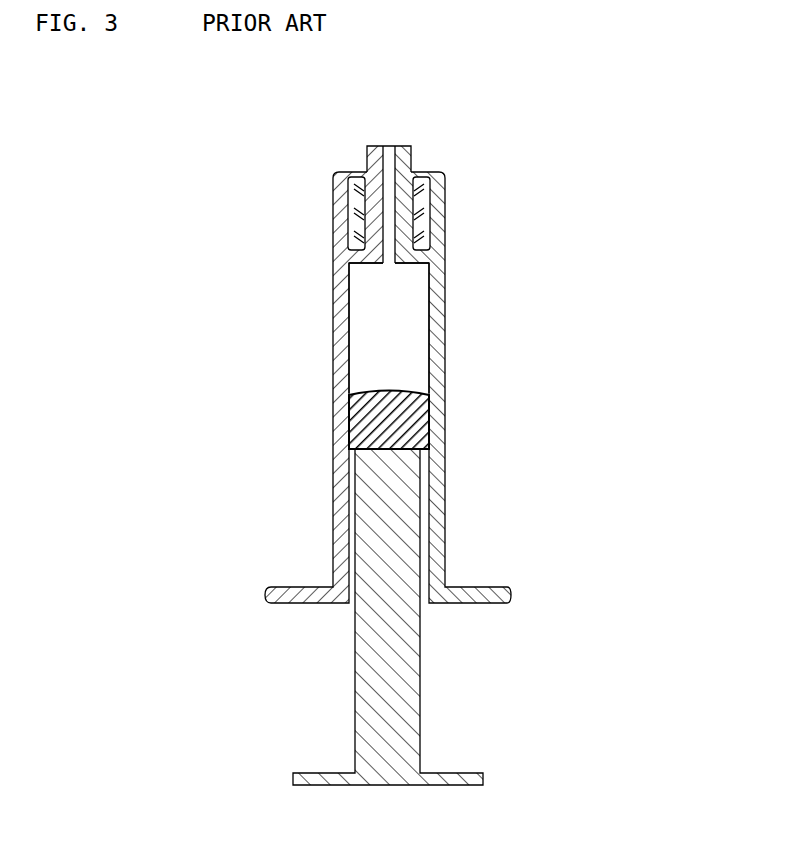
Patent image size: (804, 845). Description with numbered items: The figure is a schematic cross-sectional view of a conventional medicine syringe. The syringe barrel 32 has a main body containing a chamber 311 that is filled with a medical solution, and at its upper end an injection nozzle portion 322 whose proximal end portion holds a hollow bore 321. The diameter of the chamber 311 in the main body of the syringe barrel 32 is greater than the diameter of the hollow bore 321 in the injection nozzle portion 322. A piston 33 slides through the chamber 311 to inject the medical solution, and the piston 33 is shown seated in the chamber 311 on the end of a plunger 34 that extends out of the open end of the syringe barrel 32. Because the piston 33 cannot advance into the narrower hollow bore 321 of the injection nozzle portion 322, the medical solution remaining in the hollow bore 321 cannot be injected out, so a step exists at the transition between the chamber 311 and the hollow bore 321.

The syringe barrel 32 is at (293, 258).
The hollow bore 321 is at (392, 192).
The injection nozzle portion 322 is at (362, 159).
The chamber 311 is at (393, 313).
The piston 33 is at (427, 425).
The plunger 34 is at (325, 690).